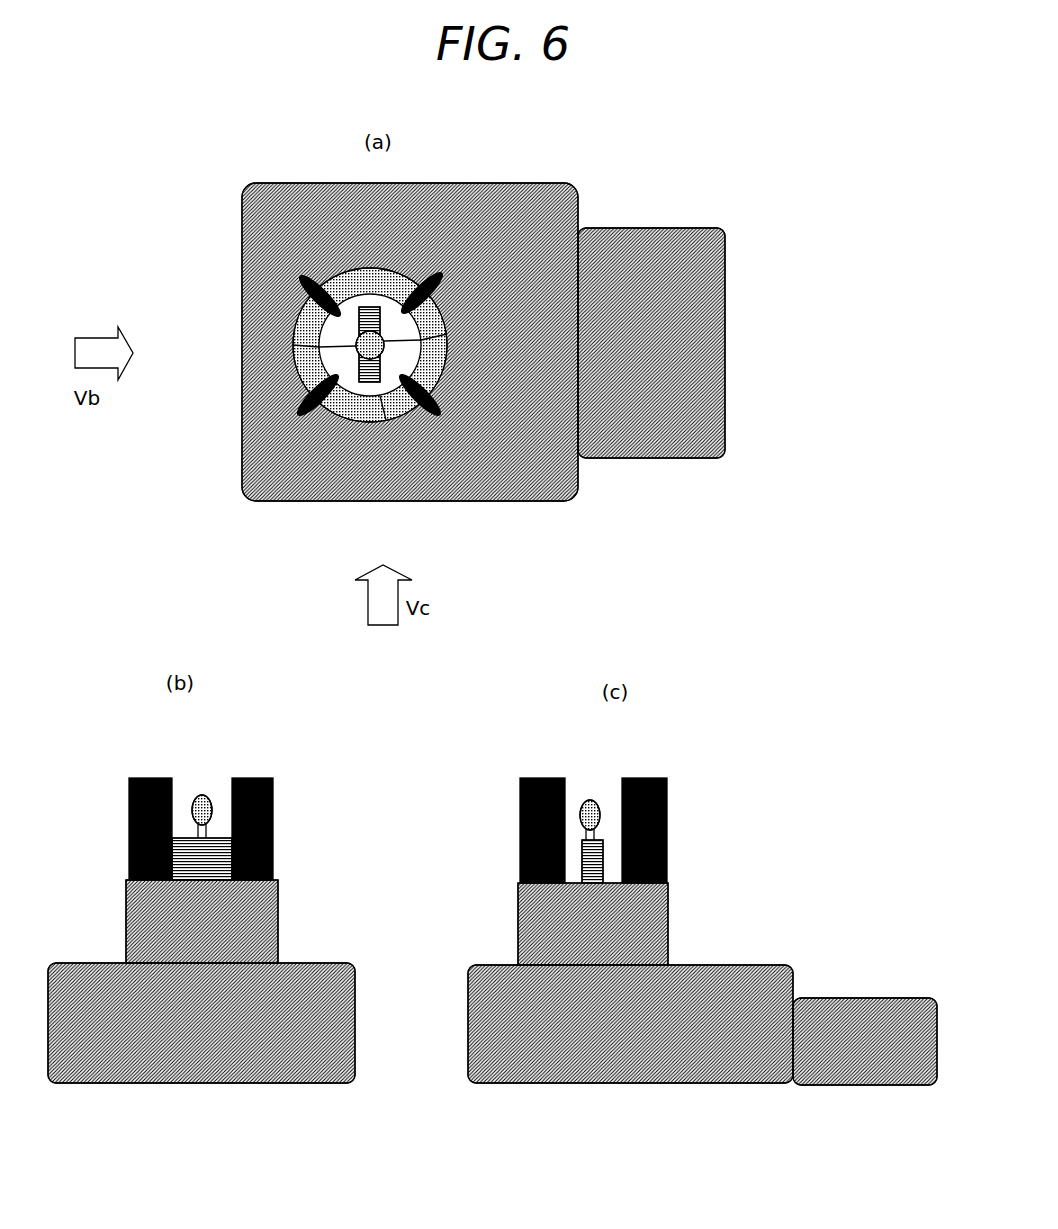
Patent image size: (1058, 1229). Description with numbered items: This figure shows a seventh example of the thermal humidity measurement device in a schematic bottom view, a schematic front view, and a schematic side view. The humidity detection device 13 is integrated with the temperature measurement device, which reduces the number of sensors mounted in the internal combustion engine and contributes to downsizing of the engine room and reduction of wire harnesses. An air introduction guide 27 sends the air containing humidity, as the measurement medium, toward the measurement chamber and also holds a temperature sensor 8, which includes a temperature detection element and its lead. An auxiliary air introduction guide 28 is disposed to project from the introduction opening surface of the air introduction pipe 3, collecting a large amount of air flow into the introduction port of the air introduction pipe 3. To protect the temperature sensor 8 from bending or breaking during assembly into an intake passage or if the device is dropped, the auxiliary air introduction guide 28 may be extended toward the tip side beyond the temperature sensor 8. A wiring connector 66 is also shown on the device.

The humidity detection device 13 is at (240, 246).
The air introduction pipe 3 is at (447, 323).
The temperature sensor 8 is at (303, 335).
The air introduction guide 27 is at (440, 408).
The auxiliary air introduction guide 28 is at (443, 412).
The wiring connector 66 is at (667, 458).